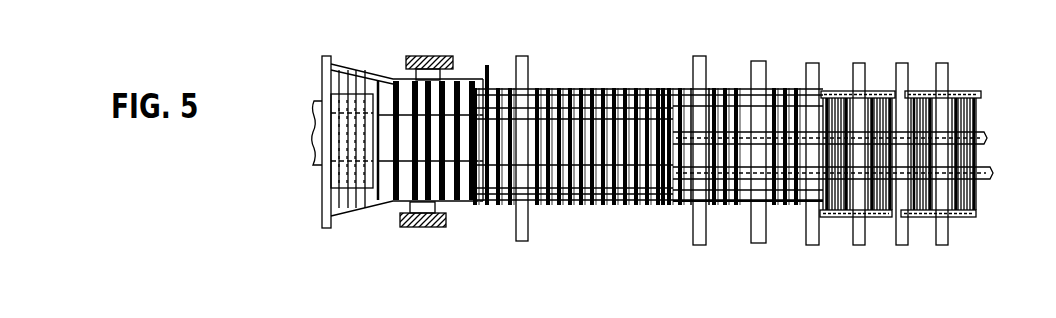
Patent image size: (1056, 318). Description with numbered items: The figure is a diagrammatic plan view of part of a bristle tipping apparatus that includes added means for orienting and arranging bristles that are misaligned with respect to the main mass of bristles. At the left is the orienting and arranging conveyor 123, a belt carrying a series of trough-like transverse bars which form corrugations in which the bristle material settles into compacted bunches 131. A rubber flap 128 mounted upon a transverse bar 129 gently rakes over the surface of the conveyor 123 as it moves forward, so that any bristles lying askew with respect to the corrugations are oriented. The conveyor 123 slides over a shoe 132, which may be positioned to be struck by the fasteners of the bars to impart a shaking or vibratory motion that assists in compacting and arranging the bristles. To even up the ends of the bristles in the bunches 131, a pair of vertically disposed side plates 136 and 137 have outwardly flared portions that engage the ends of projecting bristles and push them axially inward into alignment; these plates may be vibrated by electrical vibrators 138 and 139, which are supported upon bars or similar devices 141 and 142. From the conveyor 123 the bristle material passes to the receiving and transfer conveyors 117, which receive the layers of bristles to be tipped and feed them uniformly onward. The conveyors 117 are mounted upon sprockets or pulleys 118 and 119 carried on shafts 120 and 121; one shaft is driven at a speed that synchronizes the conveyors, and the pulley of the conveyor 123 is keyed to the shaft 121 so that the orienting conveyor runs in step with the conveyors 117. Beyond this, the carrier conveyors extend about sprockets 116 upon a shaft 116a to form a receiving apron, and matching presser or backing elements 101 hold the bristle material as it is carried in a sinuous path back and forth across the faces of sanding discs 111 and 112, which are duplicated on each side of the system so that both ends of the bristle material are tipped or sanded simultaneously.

The presser or backing elements 101 is at (980, 129).
The sanding disc 111 is at (872, 83).
The sanding disc 112 is at (960, 85).
The sprockets 116 is at (711, 129).
The shaft 116a is at (698, 53).
The receiving and transfer conveyors 117 is at (656, 195).
The sprockets or pulleys 118 is at (713, 194).
The sprockets or pulleys 119 is at (538, 184).
The shaft 120 is at (750, 168).
The shaft 121 is at (511, 234).
The orienting and arranging conveyor 123 is at (303, 137).
The rubber flap 128 is at (343, 96).
The transverse bar 129 is at (317, 210).
The bunches 131 is at (548, 82).
The shoe 132 is at (315, 150).
The side plate 136 is at (328, 55).
The side plate 137 is at (348, 200).
The electrical vibrator 138 is at (418, 48).
The electrical vibrator 139 is at (405, 213).
The bar 141 is at (397, 53).
The bar 142 is at (432, 218).